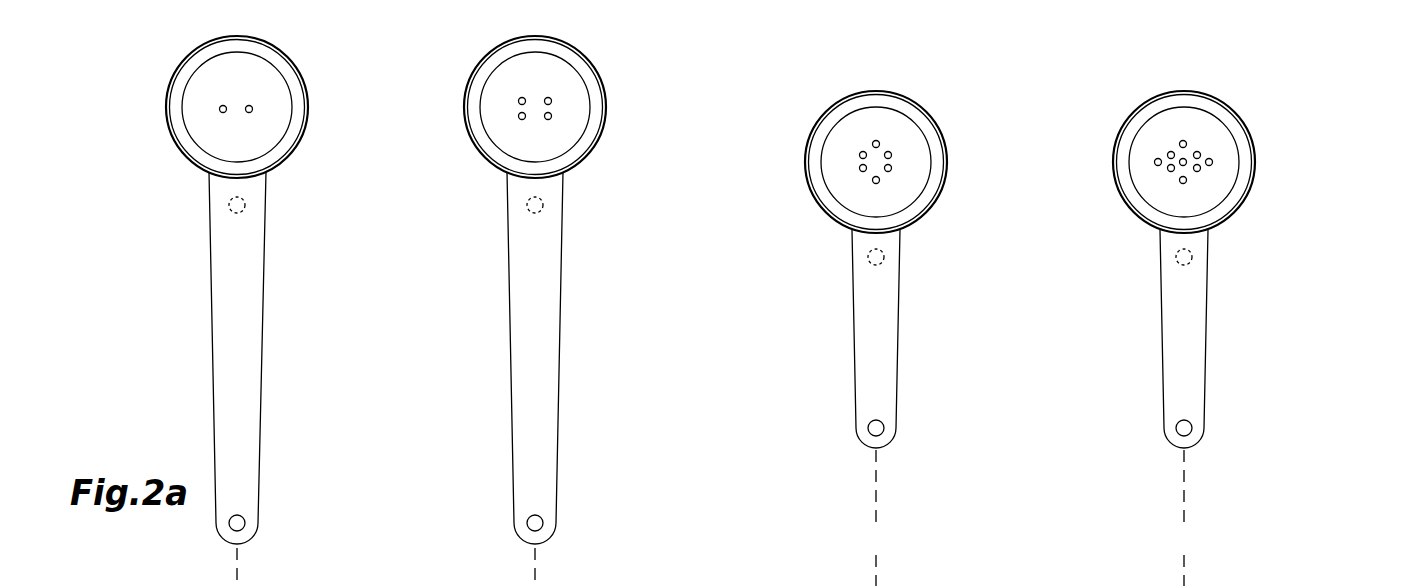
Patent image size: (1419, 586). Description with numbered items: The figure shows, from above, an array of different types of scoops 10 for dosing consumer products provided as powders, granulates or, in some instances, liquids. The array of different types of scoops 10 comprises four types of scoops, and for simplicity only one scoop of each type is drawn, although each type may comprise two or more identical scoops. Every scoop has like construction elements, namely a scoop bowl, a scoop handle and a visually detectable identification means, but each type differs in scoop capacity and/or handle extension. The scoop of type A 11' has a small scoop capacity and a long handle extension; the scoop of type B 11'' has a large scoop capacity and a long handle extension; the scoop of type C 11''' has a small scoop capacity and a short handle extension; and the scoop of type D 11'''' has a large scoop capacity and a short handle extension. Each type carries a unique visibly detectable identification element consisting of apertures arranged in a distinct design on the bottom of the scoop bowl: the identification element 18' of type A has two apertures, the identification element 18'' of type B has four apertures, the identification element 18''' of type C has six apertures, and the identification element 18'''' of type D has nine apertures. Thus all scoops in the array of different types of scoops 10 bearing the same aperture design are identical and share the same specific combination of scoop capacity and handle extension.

The array of different types of scoops 10 is at (1300, 62).
The scoop of type A 11' is at (213, 311).
The scoop of type B 11'' is at (524, 310).
The scoop of type C 11''' is at (881, 315).
The scoop of type D 11'''' is at (1186, 325).
The visibly detectable identification element 18' is at (288, 111).
The visibly detectable identification element 18'' is at (590, 110).
The visibly detectable identification element 18''' is at (933, 162).
The visibly detectable identification element 18'''' is at (1237, 162).